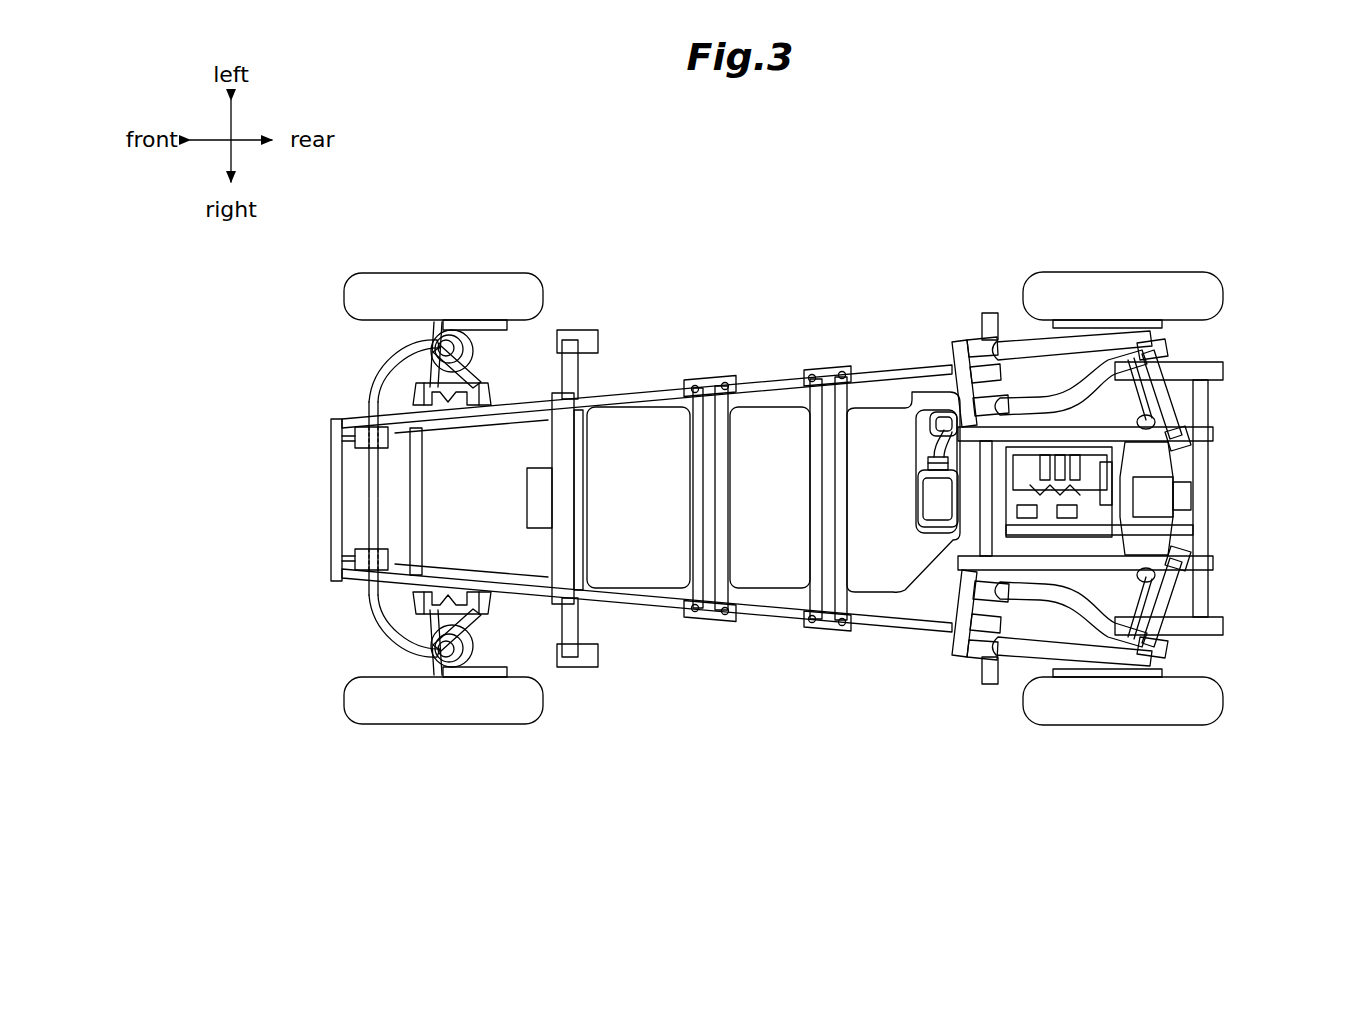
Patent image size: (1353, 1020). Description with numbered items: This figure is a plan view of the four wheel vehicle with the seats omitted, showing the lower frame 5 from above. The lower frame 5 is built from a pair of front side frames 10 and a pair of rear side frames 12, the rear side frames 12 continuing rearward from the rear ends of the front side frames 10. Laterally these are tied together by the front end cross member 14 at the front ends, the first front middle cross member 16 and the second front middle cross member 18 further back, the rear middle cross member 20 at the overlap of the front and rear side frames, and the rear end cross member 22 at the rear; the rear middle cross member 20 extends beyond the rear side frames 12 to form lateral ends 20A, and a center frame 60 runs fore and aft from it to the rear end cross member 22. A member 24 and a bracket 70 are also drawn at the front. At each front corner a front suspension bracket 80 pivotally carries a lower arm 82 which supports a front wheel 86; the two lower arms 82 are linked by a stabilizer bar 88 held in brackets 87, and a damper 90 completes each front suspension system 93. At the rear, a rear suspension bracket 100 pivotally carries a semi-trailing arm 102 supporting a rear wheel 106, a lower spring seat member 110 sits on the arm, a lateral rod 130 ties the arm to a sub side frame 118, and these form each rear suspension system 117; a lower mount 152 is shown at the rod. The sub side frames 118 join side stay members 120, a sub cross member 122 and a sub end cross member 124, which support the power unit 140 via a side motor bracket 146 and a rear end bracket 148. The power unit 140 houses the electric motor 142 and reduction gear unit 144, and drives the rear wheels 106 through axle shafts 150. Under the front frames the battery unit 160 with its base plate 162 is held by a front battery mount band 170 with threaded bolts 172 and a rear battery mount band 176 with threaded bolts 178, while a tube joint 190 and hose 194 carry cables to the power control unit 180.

The lower frame 5 is at (786, 627).
The front side frame 10 is at (650, 395).
The rear side frame 12 is at (1213, 370).
The front end cross member 14 is at (336, 542).
The first front middle cross member 16 is at (422, 514).
The second front middle cross member 18 is at (565, 448).
The rear middle cross member 20 is at (970, 540).
The lateral end 20A is at (990, 313).
The rear end cross member 22 is at (1210, 378).
The front cross bar 24 is at (578, 379).
The center frame 60 is at (1193, 530).
The bracket 70 is at (587, 342).
The front suspension bracket 80 is at (460, 402).
The lower arm 82 is at (430, 347).
The front wheel 86 is at (418, 290).
The bracket 87 is at (352, 438).
The stabilizer bar 88 is at (368, 474).
The damper 90 is at (456, 345).
The front suspension system 93 is at (492, 366).
The rear suspension bracket 100 is at (960, 348).
The semi-trailing arm 102 is at (1073, 337).
The rear wheel 106 is at (1217, 300).
The lower spring seat member 110 is at (1050, 350).
The rear suspension system 117 is at (1172, 356).
The sub side frame 118 is at (1083, 388).
The side stay member 120 is at (1216, 434).
The sub cross member 122 is at (975, 560).
The sub end cross member 124 is at (1185, 492).
The lateral rod 130 is at (1166, 398).
The power unit 140 is at (1045, 518).
The electric motor 142 is at (1048, 470).
The reduction gear unit 144 is at (1157, 500).
The side motor bracket 146 is at (1080, 650).
The rear end bracket 148 is at (1182, 482).
The axle shaft 150 is at (1146, 350).
The lower mount 152 is at (1150, 422).
The battery unit 160 is at (630, 572).
The base plate 162 is at (755, 572).
The front battery mount band 170 is at (715, 466).
The threaded bolt 172 is at (730, 381).
The rear battery mount band 176 is at (838, 441).
The threaded bolt 178 is at (845, 370).
The power control unit 180 is at (924, 398).
The tube joint 190 is at (925, 515).
The hose 194 is at (930, 460).